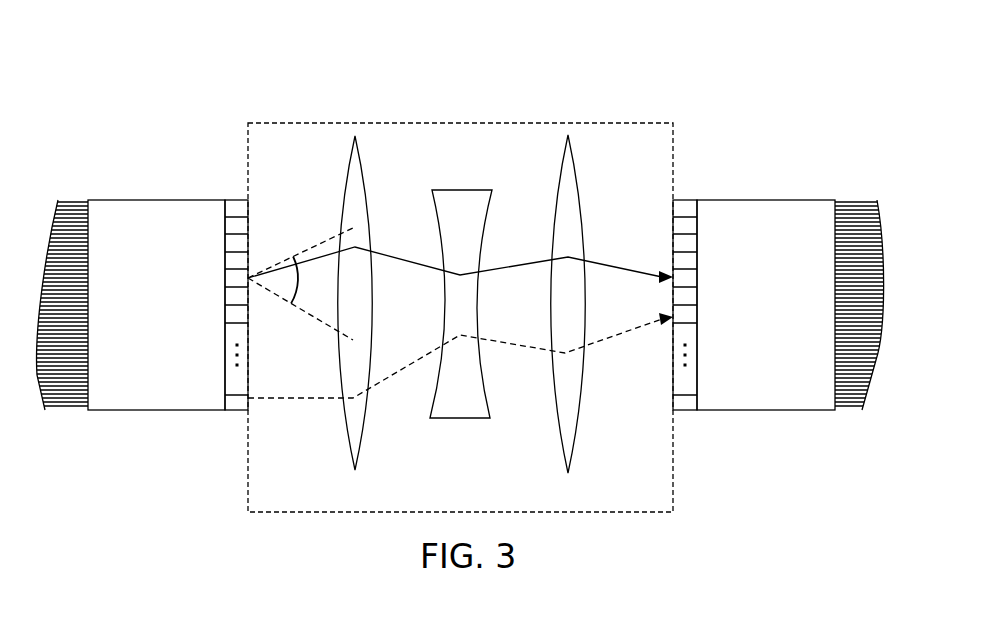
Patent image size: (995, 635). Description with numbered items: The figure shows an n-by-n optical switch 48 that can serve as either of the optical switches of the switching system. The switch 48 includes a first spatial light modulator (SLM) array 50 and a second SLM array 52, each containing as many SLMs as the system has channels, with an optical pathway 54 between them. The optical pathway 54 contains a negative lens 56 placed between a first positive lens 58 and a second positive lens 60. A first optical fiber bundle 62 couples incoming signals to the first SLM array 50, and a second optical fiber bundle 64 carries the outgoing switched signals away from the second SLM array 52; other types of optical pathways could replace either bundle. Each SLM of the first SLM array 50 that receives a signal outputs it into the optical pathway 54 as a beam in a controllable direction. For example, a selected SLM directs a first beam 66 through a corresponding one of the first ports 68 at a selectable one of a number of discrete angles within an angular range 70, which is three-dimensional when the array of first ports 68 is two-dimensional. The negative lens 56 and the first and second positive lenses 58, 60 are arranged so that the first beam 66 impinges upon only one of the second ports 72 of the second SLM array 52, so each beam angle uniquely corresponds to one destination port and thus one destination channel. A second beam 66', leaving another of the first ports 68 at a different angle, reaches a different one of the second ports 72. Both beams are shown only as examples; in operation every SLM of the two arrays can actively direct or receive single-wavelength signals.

The n×n optical switch 48 is at (540, 68).
The first spatial light modulator (SLM) array 50 is at (150, 410).
The second SLM array 52 is at (790, 410).
The optical pathway 54 is at (357, 123).
The negative lens 56 is at (453, 419).
The first positive lens 58 is at (351, 463).
The second positive lens 60 is at (575, 455).
The first optical fiber bundle 62 is at (67, 410).
The second optical fiber bundle 64 is at (850, 410).
The first beam 66 is at (460, 247).
The second beam 66' is at (460, 348).
The first ports 68 is at (225, 226).
The angular range 70 is at (304, 286).
The second ports 72 is at (698, 225).